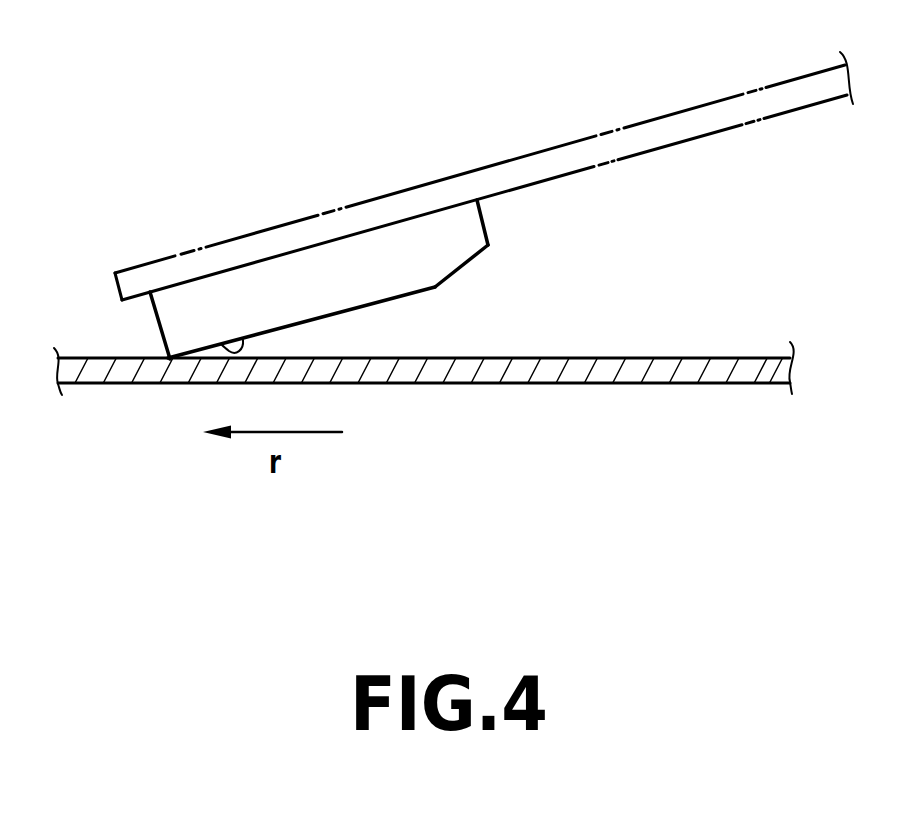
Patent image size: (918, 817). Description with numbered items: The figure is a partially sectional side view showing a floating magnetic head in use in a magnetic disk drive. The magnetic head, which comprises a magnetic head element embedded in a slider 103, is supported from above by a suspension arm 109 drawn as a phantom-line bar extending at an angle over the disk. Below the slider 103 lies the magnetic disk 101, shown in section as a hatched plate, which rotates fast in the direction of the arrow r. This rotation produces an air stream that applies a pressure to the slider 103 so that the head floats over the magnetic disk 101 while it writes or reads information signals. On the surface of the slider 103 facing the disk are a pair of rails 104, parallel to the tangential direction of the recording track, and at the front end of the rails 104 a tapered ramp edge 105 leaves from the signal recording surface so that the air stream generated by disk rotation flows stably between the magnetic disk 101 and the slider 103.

The magnetic disk 101 is at (754, 355).
The slider 103 is at (372, 243).
The rails 104 is at (243, 340).
The tapered ramp edges 105 is at (462, 271).
The suspension arm 109 is at (655, 137).